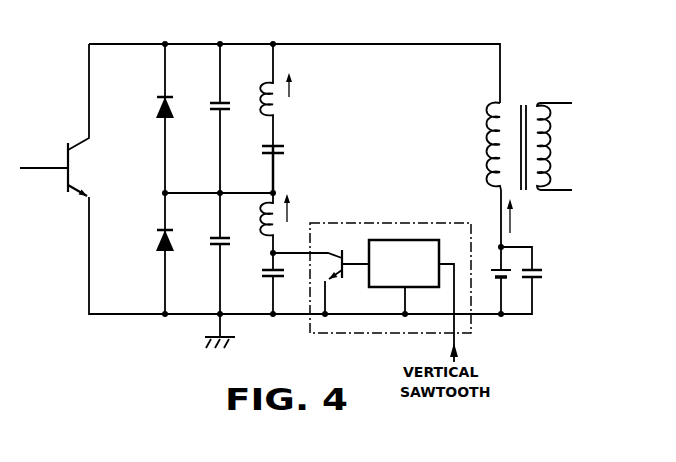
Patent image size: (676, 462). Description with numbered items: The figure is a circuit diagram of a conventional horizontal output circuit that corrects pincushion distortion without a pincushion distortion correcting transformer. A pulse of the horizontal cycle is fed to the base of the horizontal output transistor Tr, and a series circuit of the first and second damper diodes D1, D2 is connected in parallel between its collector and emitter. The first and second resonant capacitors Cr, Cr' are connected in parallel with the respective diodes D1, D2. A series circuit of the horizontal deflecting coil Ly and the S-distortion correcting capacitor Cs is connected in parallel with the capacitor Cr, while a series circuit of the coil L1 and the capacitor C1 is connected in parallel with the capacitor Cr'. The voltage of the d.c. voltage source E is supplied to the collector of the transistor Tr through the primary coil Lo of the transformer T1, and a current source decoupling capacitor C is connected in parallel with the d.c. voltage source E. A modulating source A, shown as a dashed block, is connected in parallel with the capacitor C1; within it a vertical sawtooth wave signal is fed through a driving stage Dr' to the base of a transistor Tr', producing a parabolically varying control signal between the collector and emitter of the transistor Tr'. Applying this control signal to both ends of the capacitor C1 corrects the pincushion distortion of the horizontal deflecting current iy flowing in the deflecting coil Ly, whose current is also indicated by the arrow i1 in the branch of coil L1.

The horizontal output transistor Tr is at (53, 180).
The first damper diode D1 is at (151, 179).
The second damper diode D2 is at (150, 240).
The first resonant capacitor Cr is at (231, 118).
The second resonant capacitor Cr' is at (232, 253).
The horizontal deflecting coil Ly is at (278, 116).
The S-distortion correcting capacitor Cs is at (285, 167).
The coil L1 is at (277, 234).
The capacitor C1 is at (283, 292).
The transistor Tr' is at (321, 282).
The driving stage Dr' is at (413, 301).
The modulating source A is at (410, 223).
The transformer T1 is at (545, 136).
The primary coil Lo is at (485, 175).
The d.c. voltage source E is at (502, 280).
The current source decoupling capacitor C is at (524, 280).
The horizontal deflecting current iy is at (297, 85).
The inductor current i1 is at (295, 206).